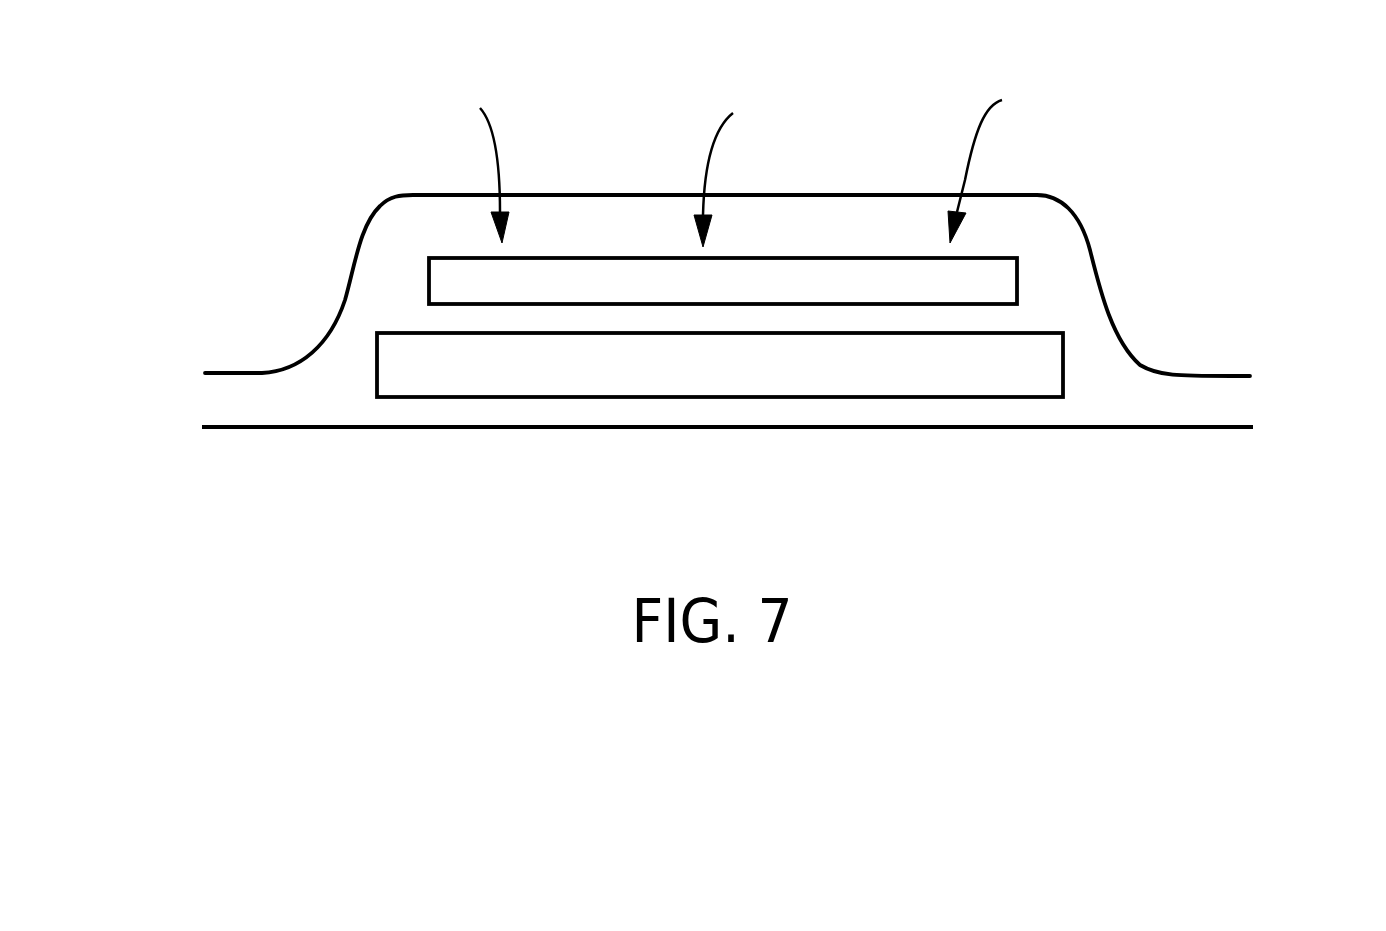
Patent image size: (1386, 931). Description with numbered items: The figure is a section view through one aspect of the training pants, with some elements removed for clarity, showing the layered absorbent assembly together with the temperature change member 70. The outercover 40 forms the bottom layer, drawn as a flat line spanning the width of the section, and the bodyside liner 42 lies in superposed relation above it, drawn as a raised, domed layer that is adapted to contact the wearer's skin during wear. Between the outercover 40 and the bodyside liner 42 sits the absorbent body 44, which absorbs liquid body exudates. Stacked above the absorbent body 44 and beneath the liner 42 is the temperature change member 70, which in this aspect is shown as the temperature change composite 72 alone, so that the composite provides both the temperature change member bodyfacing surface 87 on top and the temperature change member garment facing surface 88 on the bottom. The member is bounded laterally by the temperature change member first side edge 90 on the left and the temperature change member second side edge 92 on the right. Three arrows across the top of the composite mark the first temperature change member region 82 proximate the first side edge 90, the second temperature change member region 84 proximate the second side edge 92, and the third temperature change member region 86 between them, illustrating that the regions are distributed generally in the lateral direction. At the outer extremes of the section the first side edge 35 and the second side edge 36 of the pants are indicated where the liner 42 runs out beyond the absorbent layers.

The first side edge 35 is at (213, 395).
The second side edge 36 is at (1230, 398).
The outercover 40 is at (1007, 432).
The bodyside liner 42 is at (413, 195).
The absorbent body 44 is at (892, 373).
The temperature change member 70 is at (1020, 262).
The temperature change composite 72 is at (592, 258).
The first temperature change member region 82 is at (471, 155).
The second temperature change member region 84 is at (997, 157).
The third temperature change member region 86 is at (737, 165).
The temperature change member bodyfacing surface 87 is at (823, 257).
The temperature change member garment facing surface 88 is at (512, 305).
The temperature change member first side edge 90 is at (427, 273).
The temperature change member second side edge 92 is at (1017, 285).